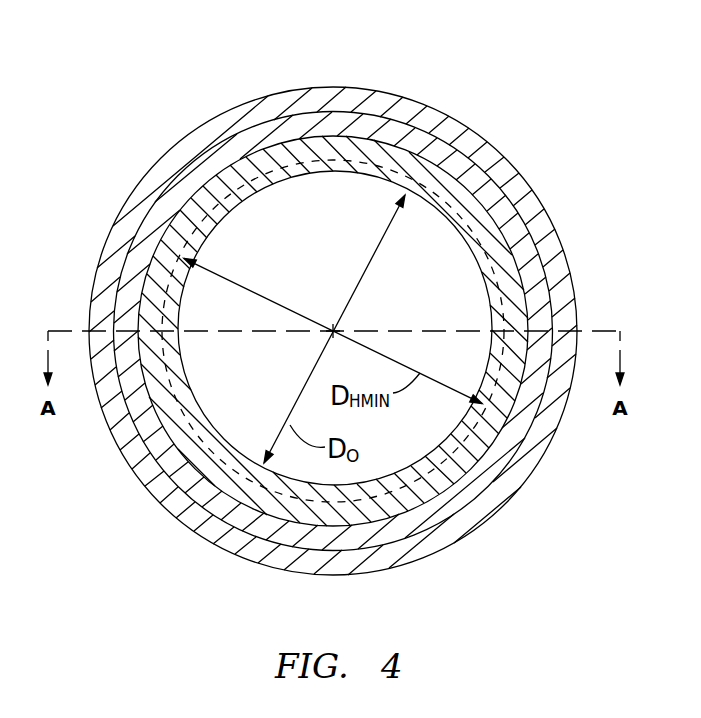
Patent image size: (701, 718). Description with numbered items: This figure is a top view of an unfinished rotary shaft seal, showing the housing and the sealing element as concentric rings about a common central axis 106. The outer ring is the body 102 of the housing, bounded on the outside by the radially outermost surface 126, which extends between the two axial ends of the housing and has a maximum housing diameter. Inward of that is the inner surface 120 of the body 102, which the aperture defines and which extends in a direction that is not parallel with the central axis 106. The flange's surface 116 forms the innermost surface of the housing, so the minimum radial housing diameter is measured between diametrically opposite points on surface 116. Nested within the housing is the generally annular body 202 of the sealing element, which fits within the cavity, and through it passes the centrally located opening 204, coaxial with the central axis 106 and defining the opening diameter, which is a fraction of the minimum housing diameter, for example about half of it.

The body 102 is at (152, 482).
The central axis 106 is at (332, 329).
The surface 116 is at (210, 218).
The inner surface 120 is at (487, 470).
The radially outermost surface 126 is at (256, 90).
The body 202 is at (495, 262).
The opening 204 is at (422, 244).